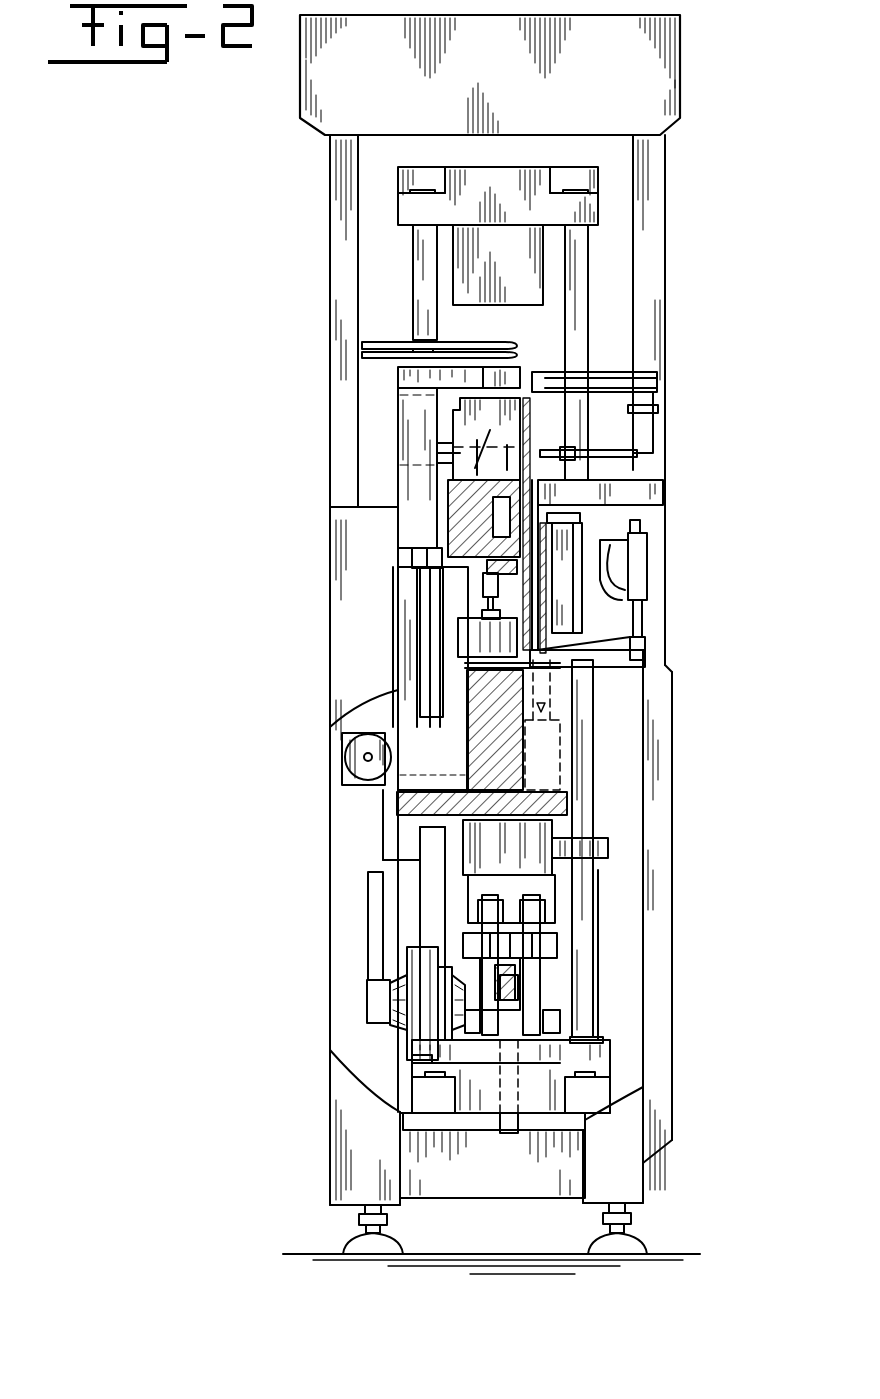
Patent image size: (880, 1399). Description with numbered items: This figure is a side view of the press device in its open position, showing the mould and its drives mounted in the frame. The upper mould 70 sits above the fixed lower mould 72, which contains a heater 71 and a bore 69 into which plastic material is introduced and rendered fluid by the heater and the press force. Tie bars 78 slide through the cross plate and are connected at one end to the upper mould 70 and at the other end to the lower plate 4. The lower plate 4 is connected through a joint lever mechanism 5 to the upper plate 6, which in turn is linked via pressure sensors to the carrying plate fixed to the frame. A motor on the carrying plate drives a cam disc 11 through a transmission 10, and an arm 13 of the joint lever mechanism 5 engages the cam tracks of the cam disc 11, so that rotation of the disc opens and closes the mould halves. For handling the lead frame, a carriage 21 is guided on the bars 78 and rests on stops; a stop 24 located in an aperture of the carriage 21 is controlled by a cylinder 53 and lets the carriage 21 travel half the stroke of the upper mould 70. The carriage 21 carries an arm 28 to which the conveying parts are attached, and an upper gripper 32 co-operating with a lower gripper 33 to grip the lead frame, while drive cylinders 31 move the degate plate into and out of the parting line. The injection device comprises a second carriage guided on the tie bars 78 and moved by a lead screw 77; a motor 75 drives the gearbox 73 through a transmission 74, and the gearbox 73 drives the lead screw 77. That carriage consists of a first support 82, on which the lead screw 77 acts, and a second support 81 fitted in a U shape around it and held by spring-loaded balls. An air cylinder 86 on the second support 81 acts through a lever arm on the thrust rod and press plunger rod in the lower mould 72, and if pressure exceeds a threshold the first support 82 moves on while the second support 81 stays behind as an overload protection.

The lower plate 4 is at (600, 1060).
The joint lever mechanism 5 is at (570, 935).
The upper plate 6 is at (548, 888).
The transmission 10 is at (372, 925).
The cam disc 11 is at (510, 1133).
The arm 13 is at (520, 972).
The carriage 21 is at (410, 445).
The stop 24 is at (467, 567).
The arm 28 is at (492, 380).
The drive cylinders 31 is at (395, 470).
The upper gripper 32 is at (512, 342).
The lower gripper 33 is at (517, 355).
The cylinder 53 is at (470, 638).
The bore 69 is at (590, 398).
The upper mould 70 is at (537, 283).
The heater 71 is at (640, 425).
The lower mould 72 is at (600, 468).
The gearbox 73 is at (560, 763).
The transmission 74 is at (565, 806).
The motor 75 is at (350, 765).
The lead screw 77 is at (590, 703).
The tie bars 78 is at (598, 965).
The second support 81 is at (610, 640).
The first support 82 is at (637, 592).
The air cylinder 86 is at (645, 545).